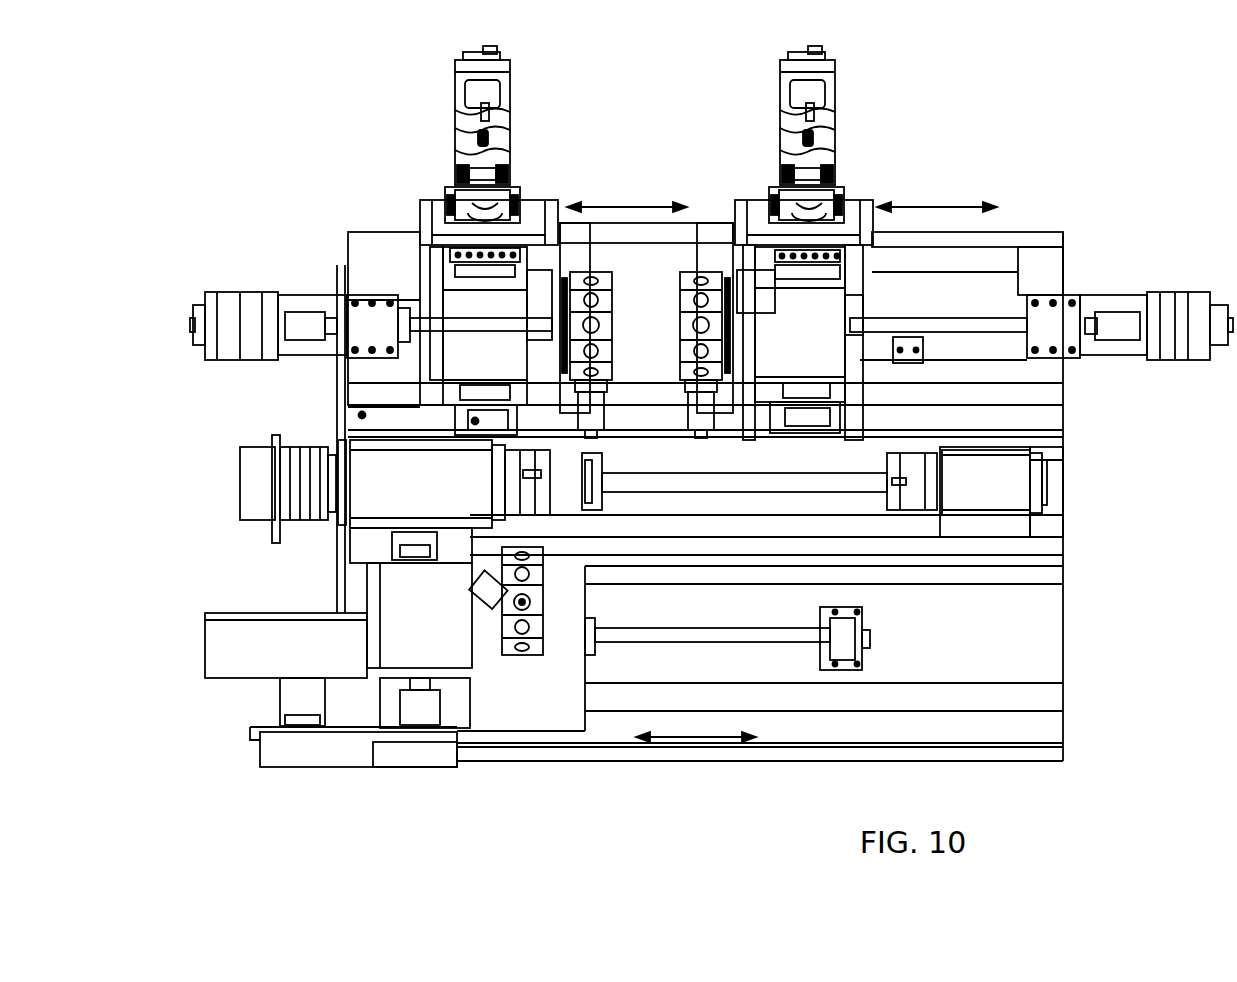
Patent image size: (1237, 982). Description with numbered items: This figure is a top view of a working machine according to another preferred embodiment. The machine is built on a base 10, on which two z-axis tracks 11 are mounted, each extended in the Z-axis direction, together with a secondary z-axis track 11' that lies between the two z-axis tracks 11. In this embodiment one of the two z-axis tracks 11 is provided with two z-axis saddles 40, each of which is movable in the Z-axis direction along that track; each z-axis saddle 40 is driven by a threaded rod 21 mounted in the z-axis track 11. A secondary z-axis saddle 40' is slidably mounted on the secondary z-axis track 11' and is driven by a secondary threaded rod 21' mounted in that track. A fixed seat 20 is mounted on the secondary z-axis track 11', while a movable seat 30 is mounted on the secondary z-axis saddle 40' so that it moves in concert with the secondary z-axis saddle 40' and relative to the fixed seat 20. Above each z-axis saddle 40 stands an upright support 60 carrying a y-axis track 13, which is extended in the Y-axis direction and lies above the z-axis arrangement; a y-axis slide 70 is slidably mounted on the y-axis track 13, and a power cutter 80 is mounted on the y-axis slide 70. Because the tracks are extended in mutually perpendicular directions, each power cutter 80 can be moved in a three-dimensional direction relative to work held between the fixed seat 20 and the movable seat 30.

The base 10 is at (710, 750).
The z-axis track 11 is at (753, 496).
The secondary z-axis track 11' is at (1081, 487).
The y-axis track 13 is at (455, 237).
The fixed seat 20 is at (360, 507).
The threaded rod 21 is at (718, 494).
The secondary threaded rod 21' is at (759, 475).
The movable seat 30 is at (962, 500).
The z-axis saddle 40 is at (713, 285).
The secondary z-axis saddle 40' is at (1037, 517).
The upright support 60 is at (485, 225).
The y-axis slide 70 is at (420, 238).
The power cutter 80 is at (678, 330).